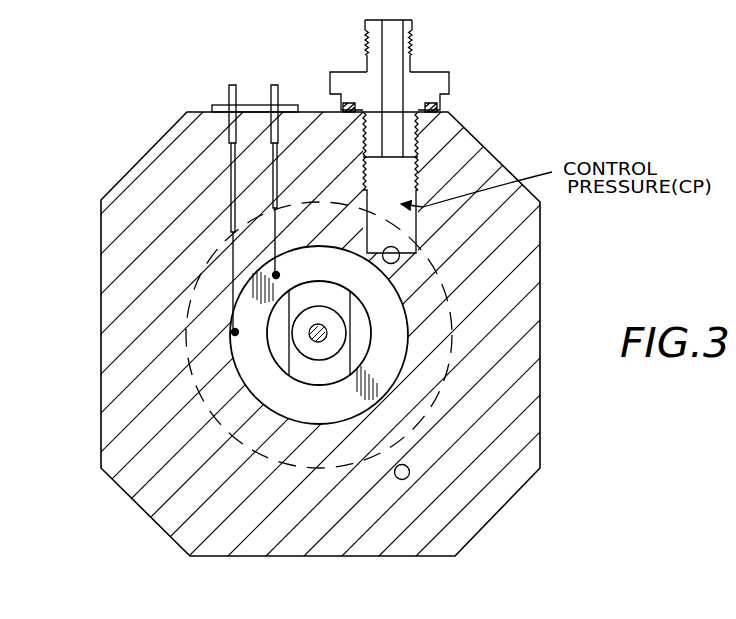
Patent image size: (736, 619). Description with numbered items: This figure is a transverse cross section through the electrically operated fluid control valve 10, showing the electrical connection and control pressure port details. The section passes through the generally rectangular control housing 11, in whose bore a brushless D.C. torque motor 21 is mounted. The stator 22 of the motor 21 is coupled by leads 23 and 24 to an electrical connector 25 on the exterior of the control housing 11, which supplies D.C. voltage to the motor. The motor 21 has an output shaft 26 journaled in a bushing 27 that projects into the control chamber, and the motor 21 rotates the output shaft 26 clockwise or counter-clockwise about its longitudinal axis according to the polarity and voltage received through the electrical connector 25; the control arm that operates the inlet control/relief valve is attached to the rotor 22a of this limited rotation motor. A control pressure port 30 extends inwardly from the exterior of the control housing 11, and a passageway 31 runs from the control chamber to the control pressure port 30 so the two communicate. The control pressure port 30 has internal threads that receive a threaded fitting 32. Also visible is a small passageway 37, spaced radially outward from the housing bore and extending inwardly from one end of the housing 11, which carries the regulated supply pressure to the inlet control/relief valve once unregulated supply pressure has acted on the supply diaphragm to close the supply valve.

The electrically operated fluid control valve 10 is at (368, 349).
The control housing 11 is at (542, 322).
The brushless D.C. torque motor 21 is at (410, 306).
The stator 22 is at (378, 372).
The rotor 22a is at (322, 373).
The lead 23 is at (233, 268).
The lead 24 is at (278, 222).
The electrical connector 25 is at (254, 104).
The output shaft 26 is at (328, 331).
The bushing 27 is at (310, 353).
The control pressure port 30 is at (403, 167).
The passageway 31 is at (398, 250).
The threaded fitting 32 is at (449, 72).
The small passageway 37 is at (401, 480).